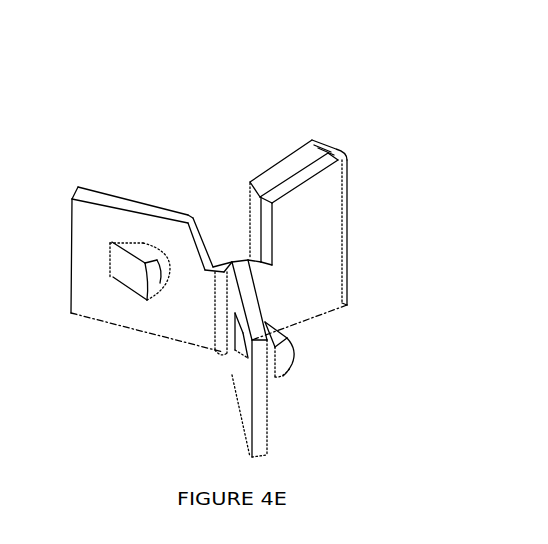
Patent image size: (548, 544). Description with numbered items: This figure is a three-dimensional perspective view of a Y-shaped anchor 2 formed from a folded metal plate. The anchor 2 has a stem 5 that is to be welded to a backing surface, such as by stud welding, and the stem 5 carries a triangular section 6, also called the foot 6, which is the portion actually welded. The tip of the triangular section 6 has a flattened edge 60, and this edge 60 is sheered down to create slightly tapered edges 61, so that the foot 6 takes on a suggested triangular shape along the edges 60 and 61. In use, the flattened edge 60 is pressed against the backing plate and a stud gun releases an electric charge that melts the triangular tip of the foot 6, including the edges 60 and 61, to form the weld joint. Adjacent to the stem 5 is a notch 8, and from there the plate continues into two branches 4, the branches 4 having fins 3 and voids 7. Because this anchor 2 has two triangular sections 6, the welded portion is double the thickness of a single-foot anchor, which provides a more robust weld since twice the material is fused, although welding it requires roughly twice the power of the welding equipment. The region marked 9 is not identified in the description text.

The Y-shaped anchor 2 is at (187, 128).
The fins 3 is at (125, 292).
The branches 4 is at (221, 381).
The stem 5 is at (356, 210).
The triangular section 6 is at (304, 177).
The voids 7 is at (168, 284).
The notch 8 is at (228, 232).
The bottom edge 9 is at (354, 317).
The flattened edge 60 is at (297, 134).
The tapered edges 61 is at (330, 130).